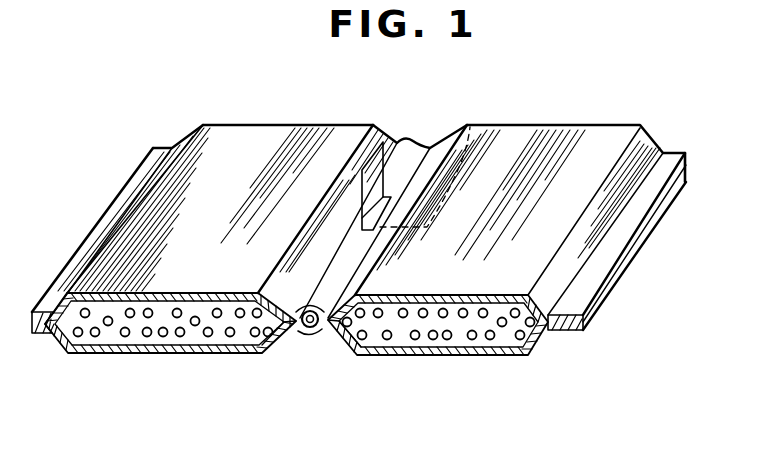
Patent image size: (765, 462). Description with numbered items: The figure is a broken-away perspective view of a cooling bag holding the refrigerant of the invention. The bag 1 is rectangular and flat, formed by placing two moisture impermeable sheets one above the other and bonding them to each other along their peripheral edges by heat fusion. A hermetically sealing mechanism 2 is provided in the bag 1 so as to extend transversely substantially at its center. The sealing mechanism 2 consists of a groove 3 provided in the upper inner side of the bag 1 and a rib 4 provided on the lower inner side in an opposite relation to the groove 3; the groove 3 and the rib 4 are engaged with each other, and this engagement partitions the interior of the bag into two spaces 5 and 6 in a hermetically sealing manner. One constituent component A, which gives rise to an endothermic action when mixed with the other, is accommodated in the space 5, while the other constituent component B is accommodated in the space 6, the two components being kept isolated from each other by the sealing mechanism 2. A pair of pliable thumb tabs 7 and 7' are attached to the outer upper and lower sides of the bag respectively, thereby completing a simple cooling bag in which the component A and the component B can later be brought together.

The bag 1 is at (285, 140).
The hermetically sealing mechanism 2 is at (337, 341).
The groove 3 is at (277, 348).
The rib 4 is at (307, 338).
The space 5 is at (86, 361).
The space 6 is at (515, 360).
The pliable thumb tab 7 is at (392, 162).
The pliable thumb tab 7' is at (440, 160).
The constituent component A is at (163, 337).
The constituent component B is at (486, 356).